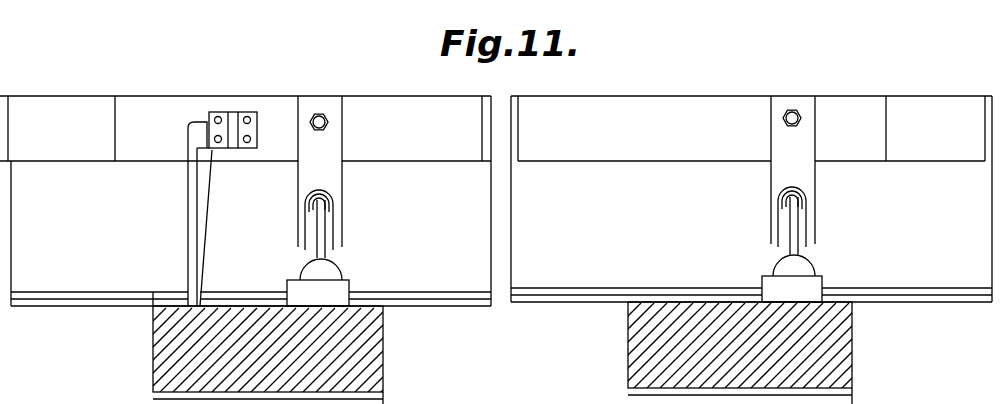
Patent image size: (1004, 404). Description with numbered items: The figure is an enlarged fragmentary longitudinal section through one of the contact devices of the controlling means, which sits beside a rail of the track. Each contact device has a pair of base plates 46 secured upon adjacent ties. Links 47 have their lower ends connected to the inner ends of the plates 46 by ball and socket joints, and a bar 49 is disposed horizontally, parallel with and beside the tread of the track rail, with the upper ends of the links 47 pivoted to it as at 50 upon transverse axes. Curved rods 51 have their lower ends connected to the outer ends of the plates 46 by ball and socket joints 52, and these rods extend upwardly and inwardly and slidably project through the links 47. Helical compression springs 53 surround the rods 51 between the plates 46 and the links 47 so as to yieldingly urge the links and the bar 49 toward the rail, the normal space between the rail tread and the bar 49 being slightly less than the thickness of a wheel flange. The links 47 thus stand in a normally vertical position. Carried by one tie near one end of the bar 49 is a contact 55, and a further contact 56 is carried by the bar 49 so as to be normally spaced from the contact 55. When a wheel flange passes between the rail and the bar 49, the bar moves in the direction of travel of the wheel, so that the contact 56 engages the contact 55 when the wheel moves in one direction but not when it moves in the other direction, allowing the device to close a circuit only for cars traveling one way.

The base plate 46 is at (346, 287).
The link 47 is at (330, 174).
The bar 49 is at (751, 128).
The pivot 50 is at (328, 122).
The curved rod 51 is at (325, 229).
The ball and socket joint 52 is at (305, 273).
The helical compression spring 53 is at (333, 202).
The contact 55 is at (187, 208).
The contact 56 is at (233, 150).